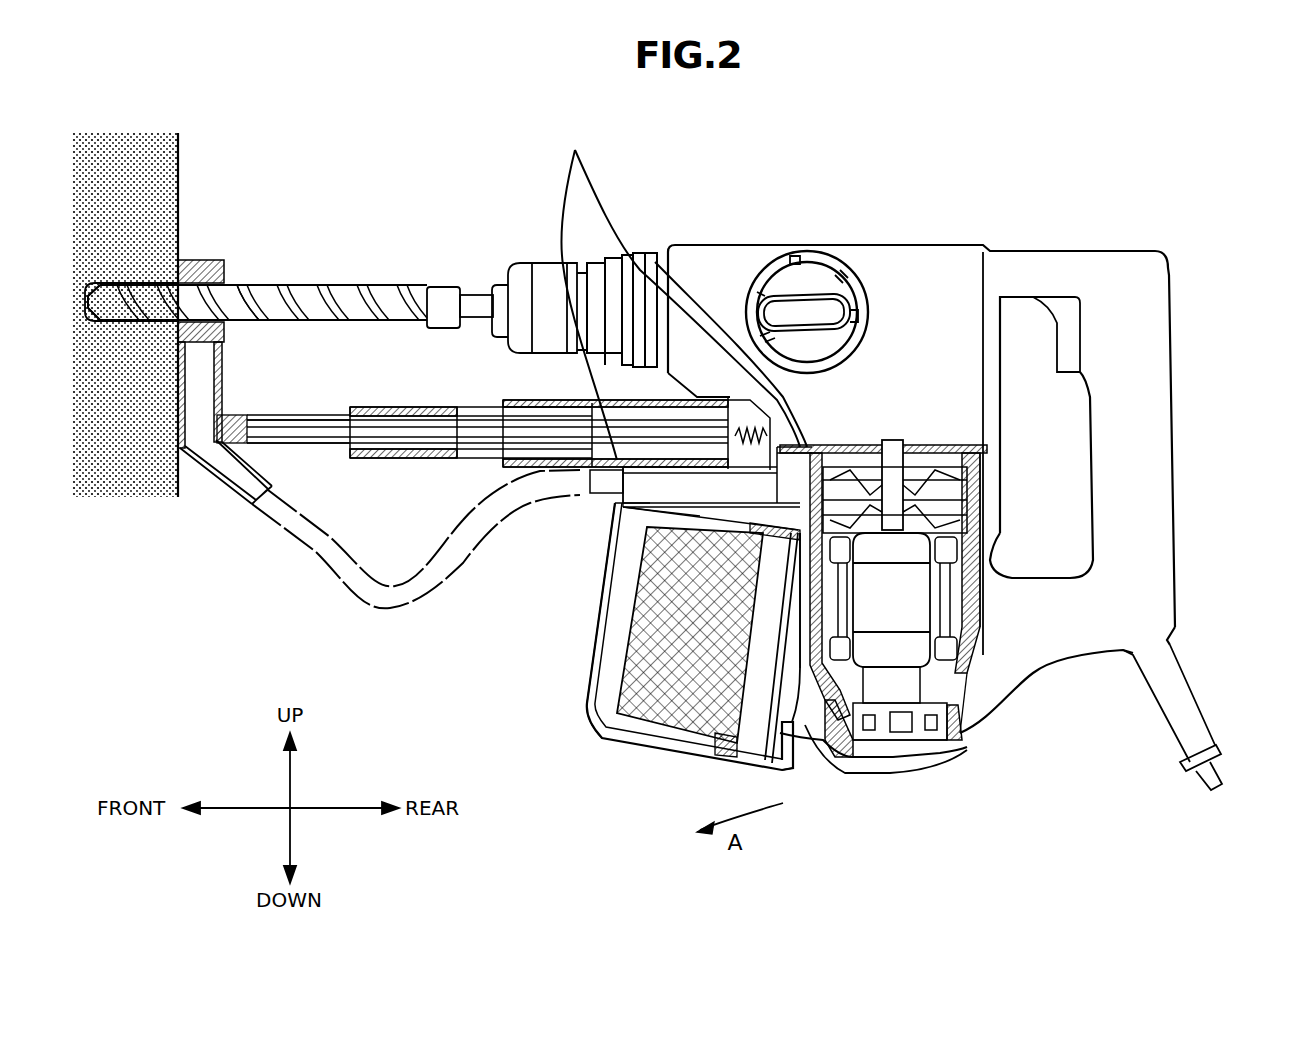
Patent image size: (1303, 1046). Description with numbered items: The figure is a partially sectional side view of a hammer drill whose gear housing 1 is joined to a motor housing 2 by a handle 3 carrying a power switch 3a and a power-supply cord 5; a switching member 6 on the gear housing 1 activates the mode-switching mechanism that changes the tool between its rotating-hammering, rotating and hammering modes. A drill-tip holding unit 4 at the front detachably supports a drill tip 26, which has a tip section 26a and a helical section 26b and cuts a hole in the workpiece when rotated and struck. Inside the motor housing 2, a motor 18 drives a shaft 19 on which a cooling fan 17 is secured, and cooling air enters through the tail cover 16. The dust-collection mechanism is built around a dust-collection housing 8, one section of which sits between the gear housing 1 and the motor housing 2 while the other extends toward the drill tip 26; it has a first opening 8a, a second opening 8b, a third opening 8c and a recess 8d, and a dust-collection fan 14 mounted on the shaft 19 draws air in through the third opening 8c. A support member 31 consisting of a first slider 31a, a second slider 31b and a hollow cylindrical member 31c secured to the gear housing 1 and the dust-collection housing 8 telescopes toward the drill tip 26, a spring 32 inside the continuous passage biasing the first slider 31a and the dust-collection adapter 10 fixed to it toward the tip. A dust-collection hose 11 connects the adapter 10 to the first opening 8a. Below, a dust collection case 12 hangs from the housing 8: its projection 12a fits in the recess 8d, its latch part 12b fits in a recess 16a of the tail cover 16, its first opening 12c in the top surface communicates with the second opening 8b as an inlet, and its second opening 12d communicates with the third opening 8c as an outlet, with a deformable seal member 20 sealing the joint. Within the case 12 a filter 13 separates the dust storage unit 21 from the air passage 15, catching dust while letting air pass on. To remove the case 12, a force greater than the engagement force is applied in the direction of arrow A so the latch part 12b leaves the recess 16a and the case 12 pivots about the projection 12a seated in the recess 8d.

The gear housing 1 is at (727, 267).
The motor housing 2 is at (912, 605).
The handle 3 is at (1137, 430).
The power switch 3a is at (1068, 337).
The drill-tip holding unit 4 is at (518, 290).
The power-supply cord 5 is at (1198, 773).
The switching member 6 is at (793, 313).
The dust-collection housing 8 is at (860, 452).
The first opening 8a is at (592, 494).
The second opening 8b is at (640, 548).
The third opening 8c is at (803, 660).
The recess 8d is at (618, 513).
The dust-collection adapter 10 is at (210, 262).
The dust-collection hose 11 is at (347, 573).
The dust collection case 12 is at (590, 652).
The projection 12a is at (612, 508).
The latch part 12b is at (793, 732).
The first opening 12c is at (657, 528).
The second opening 12d is at (600, 737).
The filter 13 is at (662, 742).
The dust-collection fan 14 is at (970, 485).
The air passage 15 is at (790, 770).
The tail cover 16 is at (930, 743).
The recess 16a is at (860, 760).
The cooling fan 17 is at (970, 522).
The motor 18 is at (955, 598).
The shaft 19 is at (970, 583).
The seal member 20 is at (684, 289).
The dust storage unit 21 is at (606, 706).
The drill tip 26 is at (403, 264).
The tip section 26a is at (103, 280).
The helical section 26b is at (262, 300).
The support member 31 is at (373, 458).
The first slider 31a is at (285, 415).
The second slider 31b is at (366, 407).
The hollow cylindrical member 31c is at (513, 400).
The spring 32 is at (293, 462).